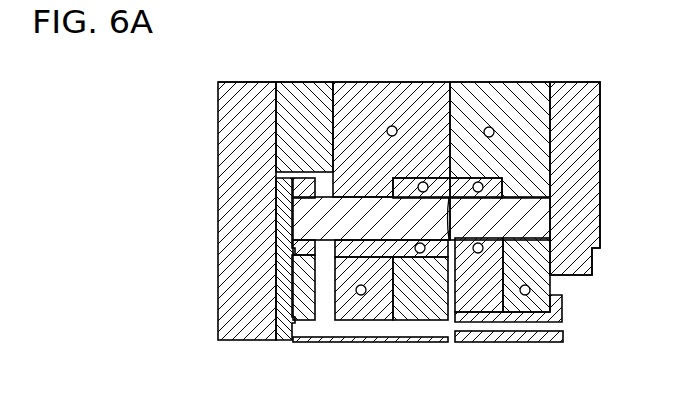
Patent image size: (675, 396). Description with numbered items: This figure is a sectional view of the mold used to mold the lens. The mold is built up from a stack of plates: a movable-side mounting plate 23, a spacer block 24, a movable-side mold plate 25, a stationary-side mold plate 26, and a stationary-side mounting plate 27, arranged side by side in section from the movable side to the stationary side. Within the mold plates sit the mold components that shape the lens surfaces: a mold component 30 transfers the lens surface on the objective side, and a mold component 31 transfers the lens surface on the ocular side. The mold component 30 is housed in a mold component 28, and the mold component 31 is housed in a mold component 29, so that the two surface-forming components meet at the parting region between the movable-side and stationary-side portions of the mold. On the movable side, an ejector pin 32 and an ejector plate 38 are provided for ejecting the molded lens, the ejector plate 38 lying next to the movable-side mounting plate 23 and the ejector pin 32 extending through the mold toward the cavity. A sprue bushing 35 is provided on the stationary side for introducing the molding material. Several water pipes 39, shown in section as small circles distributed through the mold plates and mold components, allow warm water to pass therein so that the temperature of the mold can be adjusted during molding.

The movable-side mounting plate 23 is at (246, 98).
The spacer block 24 is at (296, 92).
The movable-side mold plate 25 is at (395, 90).
The stationary-side mold plate 26 is at (502, 107).
The stationary-side mounting plate 27 is at (570, 110).
The mold component 28 is at (417, 176).
The mold component 29 is at (454, 178).
The mold component 30 is at (357, 212).
The mold component 31 is at (532, 215).
The ejector pin 32 is at (325, 258).
The sprue bushing 35 is at (522, 343).
The ejector plate 38 is at (297, 298).
The water pipe 39 is at (391, 126).